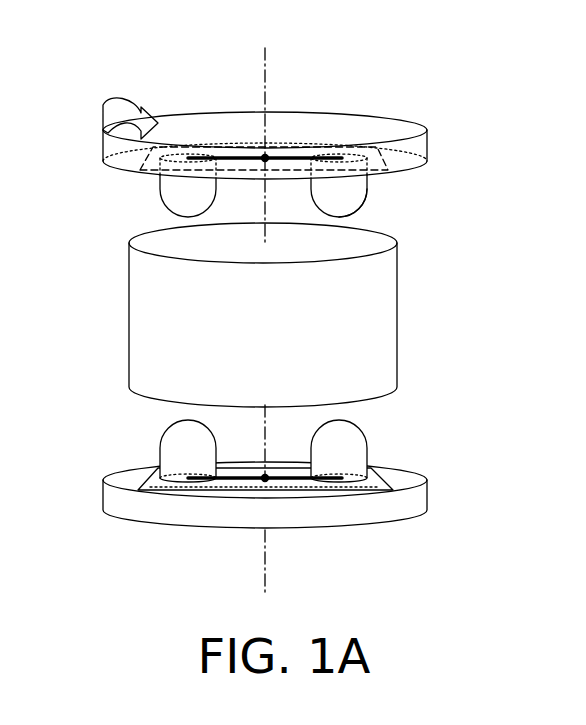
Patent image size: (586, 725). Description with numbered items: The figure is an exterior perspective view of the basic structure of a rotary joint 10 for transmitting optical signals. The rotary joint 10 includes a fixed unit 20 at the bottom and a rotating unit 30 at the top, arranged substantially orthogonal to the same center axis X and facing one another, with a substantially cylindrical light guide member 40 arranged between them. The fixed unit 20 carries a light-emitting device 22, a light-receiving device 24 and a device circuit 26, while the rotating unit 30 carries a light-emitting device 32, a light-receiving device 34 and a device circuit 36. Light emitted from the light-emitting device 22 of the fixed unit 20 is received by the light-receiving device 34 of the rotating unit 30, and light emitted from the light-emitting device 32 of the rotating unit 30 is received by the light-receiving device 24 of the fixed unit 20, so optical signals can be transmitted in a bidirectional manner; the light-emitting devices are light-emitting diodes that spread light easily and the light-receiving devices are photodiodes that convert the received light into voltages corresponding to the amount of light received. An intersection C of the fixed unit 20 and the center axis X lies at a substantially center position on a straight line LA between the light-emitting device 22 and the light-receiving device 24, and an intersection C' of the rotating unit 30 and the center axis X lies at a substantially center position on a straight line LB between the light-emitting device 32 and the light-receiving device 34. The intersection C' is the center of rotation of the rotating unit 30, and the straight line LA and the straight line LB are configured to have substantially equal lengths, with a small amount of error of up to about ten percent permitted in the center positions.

The rotary joint 10 is at (393, 78).
The fixed unit 20 is at (428, 493).
The light-emitting device 22 is at (368, 438).
The light-receiving device 24 is at (158, 440).
The device circuit 26 is at (388, 486).
The rotating unit 30 is at (411, 129).
The light-emitting device 32 is at (158, 180).
The light-receiving device 34 is at (363, 205).
The device circuit 36 is at (393, 163).
The light guide member 40 is at (397, 318).
The center axis X is at (266, 48).
The intersection C is at (246, 447).
The intersection C' is at (280, 186).
The straight line LA is at (283, 477).
The straight line LB is at (248, 160).